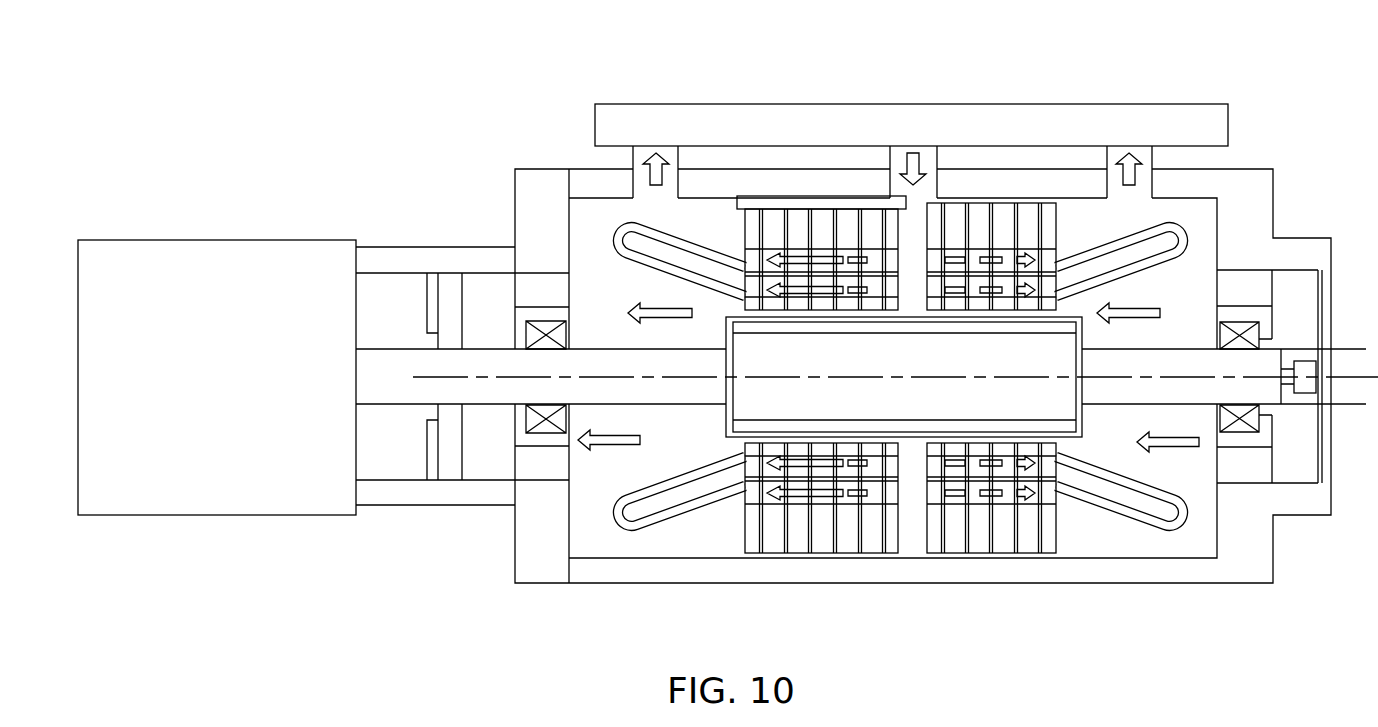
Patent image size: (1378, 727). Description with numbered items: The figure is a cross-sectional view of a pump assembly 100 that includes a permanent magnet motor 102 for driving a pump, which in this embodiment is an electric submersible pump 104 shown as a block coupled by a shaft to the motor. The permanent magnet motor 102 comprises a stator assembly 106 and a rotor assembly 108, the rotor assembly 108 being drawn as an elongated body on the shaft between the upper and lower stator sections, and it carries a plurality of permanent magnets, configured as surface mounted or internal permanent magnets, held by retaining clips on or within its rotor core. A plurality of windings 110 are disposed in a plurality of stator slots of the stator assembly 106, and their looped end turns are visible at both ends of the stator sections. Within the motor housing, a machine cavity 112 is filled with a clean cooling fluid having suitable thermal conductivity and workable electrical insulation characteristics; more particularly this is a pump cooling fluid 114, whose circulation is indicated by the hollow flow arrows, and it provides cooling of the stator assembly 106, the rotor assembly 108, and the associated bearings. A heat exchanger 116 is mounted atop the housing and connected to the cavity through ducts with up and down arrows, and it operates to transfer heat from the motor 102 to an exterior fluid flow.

The pump assembly 100 is at (296, 64).
The permanent magnet motor 102 is at (732, 587).
The electric submersible pump 104 is at (236, 262).
The stator assembly 106 is at (890, 553).
The rotor assembly 108 is at (1068, 447).
The windings 110 is at (1189, 226).
The machine cavity 112 is at (590, 218).
The pump cooling fluid 114 is at (1166, 461).
The heat exchanger 116 is at (783, 117).